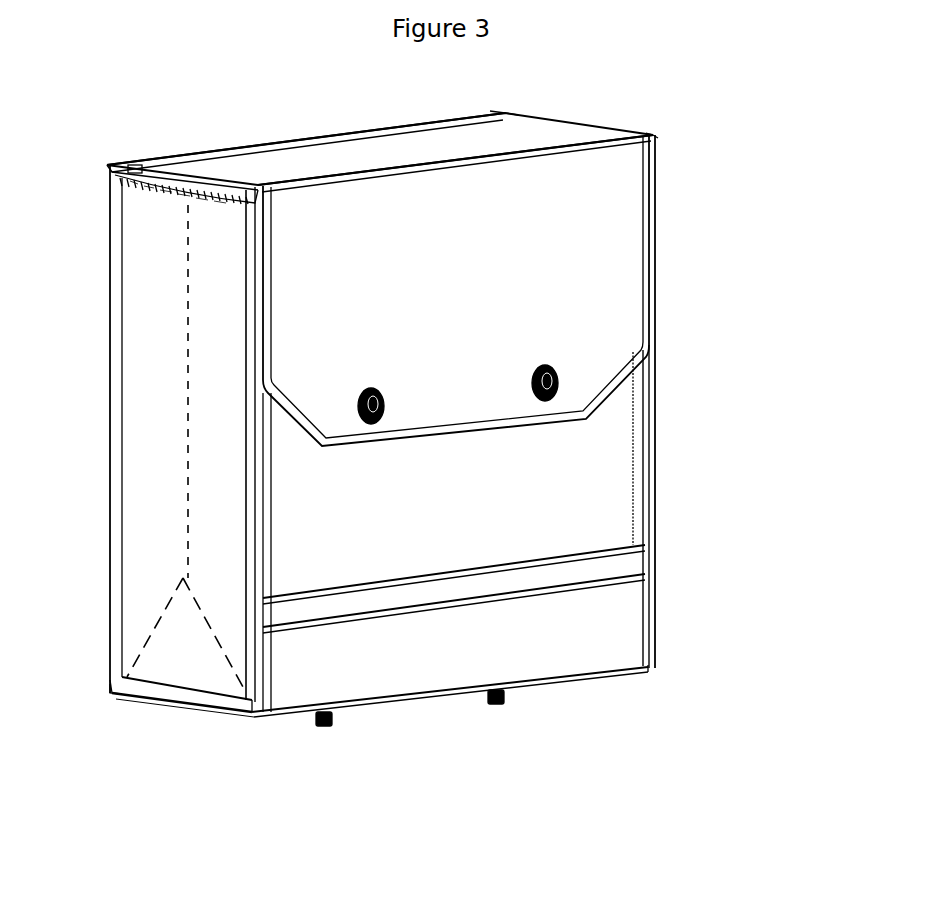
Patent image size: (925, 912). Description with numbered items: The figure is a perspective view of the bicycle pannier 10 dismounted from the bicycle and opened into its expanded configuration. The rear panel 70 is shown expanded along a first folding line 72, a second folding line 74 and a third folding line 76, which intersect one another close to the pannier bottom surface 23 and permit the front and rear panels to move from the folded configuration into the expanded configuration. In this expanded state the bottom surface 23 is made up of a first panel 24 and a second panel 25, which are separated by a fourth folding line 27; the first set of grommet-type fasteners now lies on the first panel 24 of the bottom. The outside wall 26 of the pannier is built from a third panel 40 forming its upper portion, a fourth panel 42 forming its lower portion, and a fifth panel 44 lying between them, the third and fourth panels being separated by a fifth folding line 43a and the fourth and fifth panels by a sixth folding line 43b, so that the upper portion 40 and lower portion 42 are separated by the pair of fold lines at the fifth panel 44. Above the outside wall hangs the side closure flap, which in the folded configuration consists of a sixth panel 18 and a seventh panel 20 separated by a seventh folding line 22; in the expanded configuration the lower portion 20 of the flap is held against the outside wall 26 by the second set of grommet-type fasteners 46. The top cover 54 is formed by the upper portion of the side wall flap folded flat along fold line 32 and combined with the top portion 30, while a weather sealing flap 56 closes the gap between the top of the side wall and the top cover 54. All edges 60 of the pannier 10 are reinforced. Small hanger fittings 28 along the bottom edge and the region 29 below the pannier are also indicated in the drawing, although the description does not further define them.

The pannier 10 is at (742, 116).
The sixth panel 18 is at (562, 135).
The seventh panel 20 is at (630, 256).
The seventh folding line 22 is at (656, 133).
The pannier bottom surface 23 is at (185, 748).
The first panel 24 is at (128, 706).
The second panel 25 is at (210, 716).
The outside wall panel 26 is at (578, 521).
The fourth folding line 27 is at (146, 704).
The hanger clips 28 is at (326, 728).
The bottom edge 29 is at (411, 720).
The top portion 30 is at (446, 124).
The fold line 32 is at (496, 118).
The third panel 40 is at (600, 461).
The fourth panel 42 is at (615, 634).
The fifth folding line 43a is at (647, 538).
The sixth folding line 43b is at (648, 590).
The fifth panel 44 is at (652, 556).
The second set of grommet-type fasteners 46 is at (374, 372).
The top cover 54 is at (244, 128).
The weather sealing flap 56 is at (110, 185).
The edges 60 is at (658, 232).
The rear panel 70 is at (150, 444).
The first folding line 72 is at (196, 336).
The second folding line 74 is at (156, 606).
The third folding line 76 is at (208, 614).